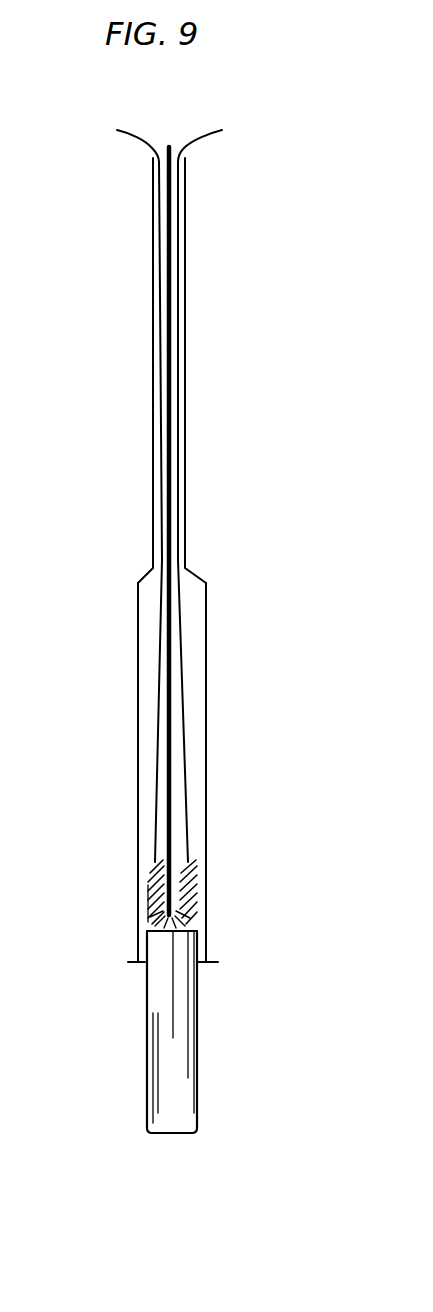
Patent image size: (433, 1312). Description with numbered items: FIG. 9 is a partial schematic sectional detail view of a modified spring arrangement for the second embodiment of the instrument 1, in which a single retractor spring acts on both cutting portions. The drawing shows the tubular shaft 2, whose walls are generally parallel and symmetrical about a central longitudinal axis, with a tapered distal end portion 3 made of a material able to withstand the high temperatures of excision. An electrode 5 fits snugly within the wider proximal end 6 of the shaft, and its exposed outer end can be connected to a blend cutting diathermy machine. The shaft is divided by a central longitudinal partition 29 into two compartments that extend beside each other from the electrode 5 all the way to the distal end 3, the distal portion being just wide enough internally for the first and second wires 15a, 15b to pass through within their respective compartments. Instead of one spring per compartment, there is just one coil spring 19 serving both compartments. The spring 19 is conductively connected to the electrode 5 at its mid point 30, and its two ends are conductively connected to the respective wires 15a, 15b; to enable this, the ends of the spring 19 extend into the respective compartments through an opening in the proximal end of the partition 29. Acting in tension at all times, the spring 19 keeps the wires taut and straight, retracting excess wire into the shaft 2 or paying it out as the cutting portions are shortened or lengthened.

The surgical instrument 1 is at (301, 336).
The tubular shaft 2 is at (152, 416).
The distal end portion 3 is at (187, 200).
The electrode 5 is at (200, 1077).
The proximal end 6 is at (139, 908).
The first wire 15a is at (159, 295).
The second wire 15b is at (178, 507).
The coil spring 19 is at (148, 885).
The central longitudinal partition 29 is at (172, 830).
The mid point 30 is at (168, 931).